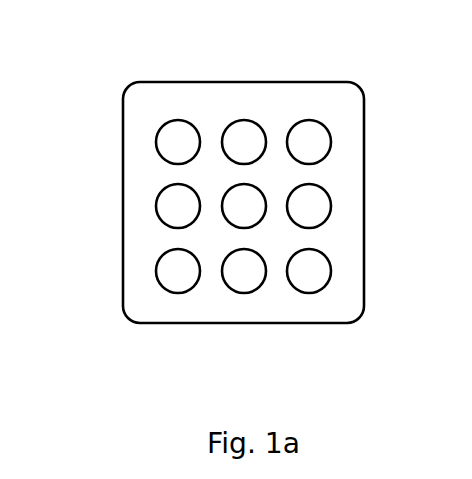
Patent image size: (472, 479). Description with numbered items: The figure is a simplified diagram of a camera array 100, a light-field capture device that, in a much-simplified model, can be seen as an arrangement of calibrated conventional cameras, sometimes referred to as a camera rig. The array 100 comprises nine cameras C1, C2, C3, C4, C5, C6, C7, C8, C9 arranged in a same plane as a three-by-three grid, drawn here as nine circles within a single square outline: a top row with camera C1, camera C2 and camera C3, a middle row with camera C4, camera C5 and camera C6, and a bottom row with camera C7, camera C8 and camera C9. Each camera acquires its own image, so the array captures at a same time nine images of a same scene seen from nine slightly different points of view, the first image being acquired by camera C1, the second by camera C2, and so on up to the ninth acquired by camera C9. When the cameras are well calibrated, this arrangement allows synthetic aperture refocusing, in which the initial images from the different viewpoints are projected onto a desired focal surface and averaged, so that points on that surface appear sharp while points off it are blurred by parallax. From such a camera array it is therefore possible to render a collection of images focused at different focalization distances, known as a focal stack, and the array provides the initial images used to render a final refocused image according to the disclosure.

The substrate / device 100 is at (136, 80).
The camera C1 is at (165, 142).
The camera C2 is at (245, 127).
The camera C3 is at (323, 142).
The camera C4 is at (165, 207).
The camera C5 is at (253, 218).
The camera C6 is at (323, 207).
The camera C7 is at (165, 272).
The camera C8 is at (245, 285).
The camera C9 is at (323, 272).